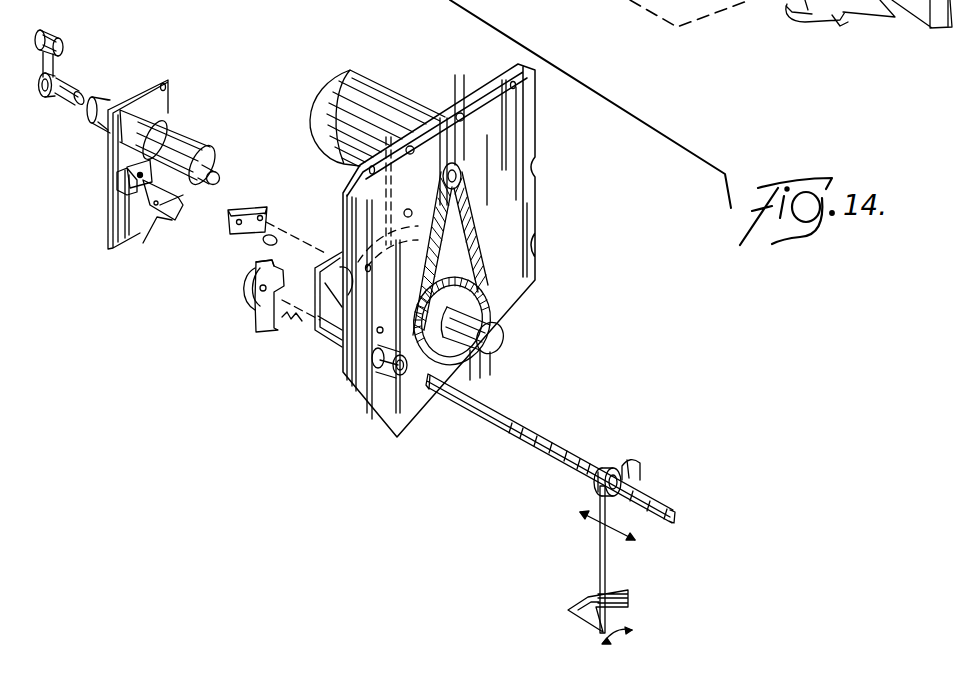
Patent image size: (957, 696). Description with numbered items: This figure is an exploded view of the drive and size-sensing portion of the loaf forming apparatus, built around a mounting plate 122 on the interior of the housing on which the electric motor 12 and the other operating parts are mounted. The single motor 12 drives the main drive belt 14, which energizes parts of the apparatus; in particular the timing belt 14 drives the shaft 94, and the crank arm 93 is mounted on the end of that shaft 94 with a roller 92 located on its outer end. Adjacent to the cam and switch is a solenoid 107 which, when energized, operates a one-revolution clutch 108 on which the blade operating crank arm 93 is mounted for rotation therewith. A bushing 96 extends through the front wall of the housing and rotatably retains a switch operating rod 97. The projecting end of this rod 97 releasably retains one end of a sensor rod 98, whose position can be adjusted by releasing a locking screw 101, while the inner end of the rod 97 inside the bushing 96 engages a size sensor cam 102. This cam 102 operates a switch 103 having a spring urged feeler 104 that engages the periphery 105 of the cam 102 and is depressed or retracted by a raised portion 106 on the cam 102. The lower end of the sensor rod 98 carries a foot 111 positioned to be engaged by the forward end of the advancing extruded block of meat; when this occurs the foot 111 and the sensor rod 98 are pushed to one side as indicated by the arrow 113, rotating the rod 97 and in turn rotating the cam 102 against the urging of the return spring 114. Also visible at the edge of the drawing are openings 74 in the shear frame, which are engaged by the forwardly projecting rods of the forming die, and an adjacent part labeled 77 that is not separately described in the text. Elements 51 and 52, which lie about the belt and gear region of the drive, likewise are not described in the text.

The electric motor 12 is at (380, 108).
The main drive belt 14 is at (468, 210).
The shaft 51 is at (483, 320).
The gear 52 is at (487, 272).
The openings 74 is at (724, 7).
The cradle 77 is at (806, 17).
The roller 92 is at (42, 29).
The crank arm 93 is at (58, 62).
The shaft 94 is at (57, 102).
The bushing 96 is at (387, 372).
The switch operating rod 97 is at (497, 413).
The sensor rod 98 is at (602, 557).
The locking screw 101 is at (635, 472).
The size sensor cam 102 is at (241, 302).
The switch 103 is at (258, 208).
The spring urged feeler 104 is at (263, 238).
The periphery 105 is at (273, 277).
The raised portion 106 is at (256, 262).
The solenoid 107 is at (153, 222).
The one-revolution clutch 108 is at (175, 140).
The foot 111 is at (622, 585).
The arrow 113 is at (618, 645).
The return spring 114 is at (293, 323).
The mounting plate 122 is at (517, 113).